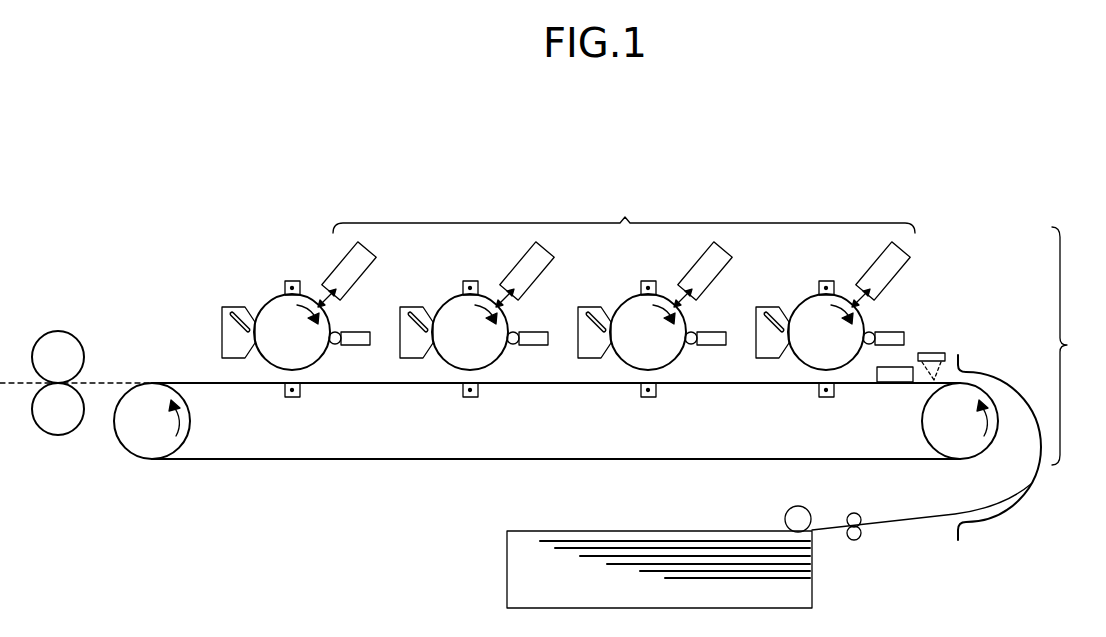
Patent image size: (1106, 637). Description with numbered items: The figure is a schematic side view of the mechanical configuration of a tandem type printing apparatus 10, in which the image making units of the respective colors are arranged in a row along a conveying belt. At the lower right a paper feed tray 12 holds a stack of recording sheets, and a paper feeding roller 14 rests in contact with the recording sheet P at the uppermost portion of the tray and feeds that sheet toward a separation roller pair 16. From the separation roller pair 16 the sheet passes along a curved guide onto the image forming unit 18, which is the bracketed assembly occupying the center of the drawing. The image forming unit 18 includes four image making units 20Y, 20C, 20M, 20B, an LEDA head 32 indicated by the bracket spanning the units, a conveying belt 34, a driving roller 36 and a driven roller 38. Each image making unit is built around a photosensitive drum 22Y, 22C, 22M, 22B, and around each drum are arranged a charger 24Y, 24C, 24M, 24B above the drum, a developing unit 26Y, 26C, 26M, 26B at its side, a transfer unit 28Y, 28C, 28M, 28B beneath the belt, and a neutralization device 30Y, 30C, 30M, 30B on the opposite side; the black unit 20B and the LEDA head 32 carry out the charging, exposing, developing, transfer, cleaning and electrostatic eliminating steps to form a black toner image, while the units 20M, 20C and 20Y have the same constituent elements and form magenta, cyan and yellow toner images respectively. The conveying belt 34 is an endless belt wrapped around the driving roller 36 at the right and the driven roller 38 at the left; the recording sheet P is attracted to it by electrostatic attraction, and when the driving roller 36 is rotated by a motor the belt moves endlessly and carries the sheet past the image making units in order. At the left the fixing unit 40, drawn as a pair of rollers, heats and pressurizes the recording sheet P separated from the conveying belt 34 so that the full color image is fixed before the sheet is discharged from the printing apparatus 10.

The printing apparatus 10 is at (955, 175).
The paper feed tray 12 is at (813, 591).
The paper feeding roller 14 is at (797, 506).
The separation roller pair 16 is at (864, 507).
The image forming unit 18 is at (1073, 346).
The image making unit 20Y is at (381, 273).
The image making unit 20C is at (559, 273).
The image making unit 20M is at (737, 273).
The image making unit 20B is at (919, 273).
The photosensitive drum 22Y is at (321, 357).
The photosensitive drum 22C is at (499, 357).
The photosensitive drum 22M is at (677, 357).
The photosensitive drum 22B is at (854, 360).
The charger 24Y is at (292, 280).
The charger 24C is at (470, 280).
The charger 24M is at (648, 280).
The charger 24B is at (826, 280).
The developing unit 26Y is at (352, 332).
The developing unit 26C is at (530, 332).
The developing unit 26M is at (707, 332).
The developing unit 26B is at (885, 332).
The transfer unit 28Y is at (292, 398).
The transfer unit 28C is at (470, 398).
The transfer unit 28M is at (648, 398).
The transfer unit 28B is at (826, 398).
The neutralization device 30Y is at (222, 332).
The neutralization device 30C is at (406, 359).
The neutralization device 30M is at (585, 359).
The neutralization device 30B is at (763, 359).
The LEDA head 32 is at (624, 214).
The conveying belt 34 is at (378, 461).
The driving roller 36 is at (922, 424).
The driven roller 38 is at (190, 421).
The fixing unit 40 is at (68, 320).
The recording sheet P is at (636, 530).